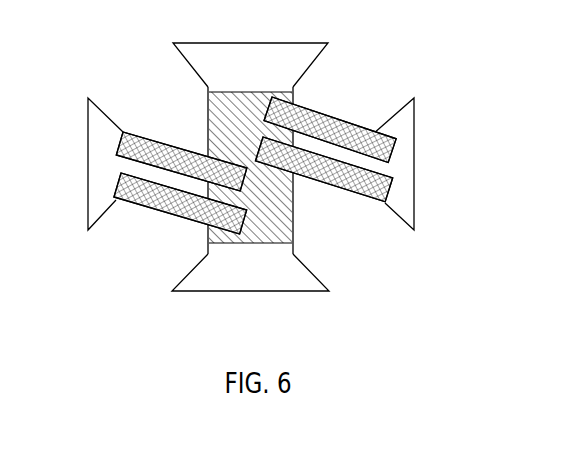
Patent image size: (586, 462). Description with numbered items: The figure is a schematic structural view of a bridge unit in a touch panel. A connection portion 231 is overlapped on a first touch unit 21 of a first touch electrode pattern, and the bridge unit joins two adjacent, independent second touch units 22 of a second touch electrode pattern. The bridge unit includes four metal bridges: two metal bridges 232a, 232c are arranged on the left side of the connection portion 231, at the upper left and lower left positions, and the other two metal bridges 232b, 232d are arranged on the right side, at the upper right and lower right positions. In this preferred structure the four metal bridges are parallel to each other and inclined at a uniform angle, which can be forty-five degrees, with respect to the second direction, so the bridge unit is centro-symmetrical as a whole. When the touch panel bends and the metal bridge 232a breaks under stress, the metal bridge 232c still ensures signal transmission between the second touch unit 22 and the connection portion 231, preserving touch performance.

The first touch unit 21 is at (275, 59).
The second touch unit 22 is at (400, 140).
The connection portion 231 is at (230, 129).
The metal bridge 232a is at (178, 158).
The metal bridge 232b is at (308, 125).
The metal bridge 232c is at (175, 218).
The metal bridge 232d is at (313, 173).